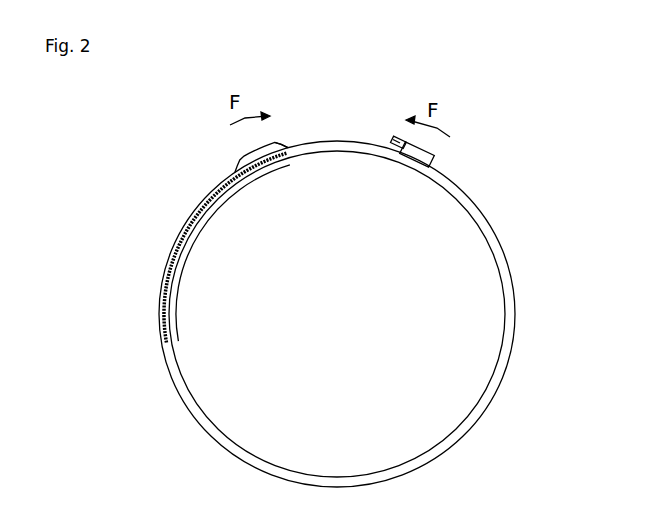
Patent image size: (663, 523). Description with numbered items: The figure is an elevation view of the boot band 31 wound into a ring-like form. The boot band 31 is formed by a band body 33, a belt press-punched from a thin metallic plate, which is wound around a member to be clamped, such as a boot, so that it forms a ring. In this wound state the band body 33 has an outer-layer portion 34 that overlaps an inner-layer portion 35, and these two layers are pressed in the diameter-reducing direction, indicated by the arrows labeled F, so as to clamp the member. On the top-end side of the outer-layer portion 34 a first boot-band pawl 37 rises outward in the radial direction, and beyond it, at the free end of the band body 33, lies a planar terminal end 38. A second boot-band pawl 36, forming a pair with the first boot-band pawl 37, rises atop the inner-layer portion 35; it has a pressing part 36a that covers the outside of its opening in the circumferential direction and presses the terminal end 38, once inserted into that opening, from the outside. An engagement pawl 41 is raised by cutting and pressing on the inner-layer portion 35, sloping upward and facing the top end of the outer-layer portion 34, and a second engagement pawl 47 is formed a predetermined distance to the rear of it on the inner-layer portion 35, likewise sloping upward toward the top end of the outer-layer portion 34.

The boot band 31 is at (484, 130).
The band body 33 is at (518, 286).
The outer-layer portion 34 is at (200, 190).
The inner-layer portion 35 is at (288, 166).
The second boot-band pawl 36 is at (440, 156).
The pressing part 36a is at (395, 133).
The first boot-band pawl 37 is at (242, 151).
The terminal end 38 is at (283, 147).
The engagement pawl 41 is at (184, 218).
The second engagement pawl 47 is at (163, 298).